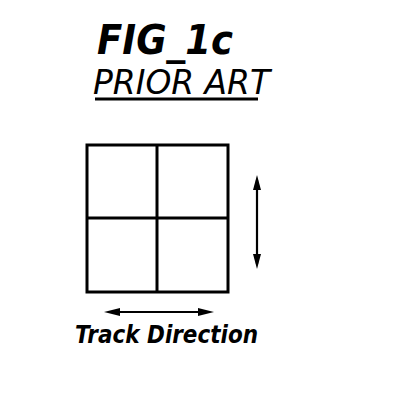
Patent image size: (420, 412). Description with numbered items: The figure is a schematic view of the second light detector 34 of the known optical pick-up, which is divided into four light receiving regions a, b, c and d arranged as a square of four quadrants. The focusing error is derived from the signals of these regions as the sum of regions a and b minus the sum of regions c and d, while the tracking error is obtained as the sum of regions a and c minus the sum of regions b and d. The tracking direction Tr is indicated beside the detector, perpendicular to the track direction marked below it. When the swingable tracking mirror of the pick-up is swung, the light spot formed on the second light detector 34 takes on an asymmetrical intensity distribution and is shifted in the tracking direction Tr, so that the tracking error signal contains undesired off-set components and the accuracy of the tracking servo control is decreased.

The second light detector 34 is at (87, 200).
The light receiving region a is at (193, 182).
The light receiving region b is at (193, 255).
The light receiving region c is at (122, 182).
The light receiving region d is at (122, 255).
The tracking direction Tr is at (259, 220).